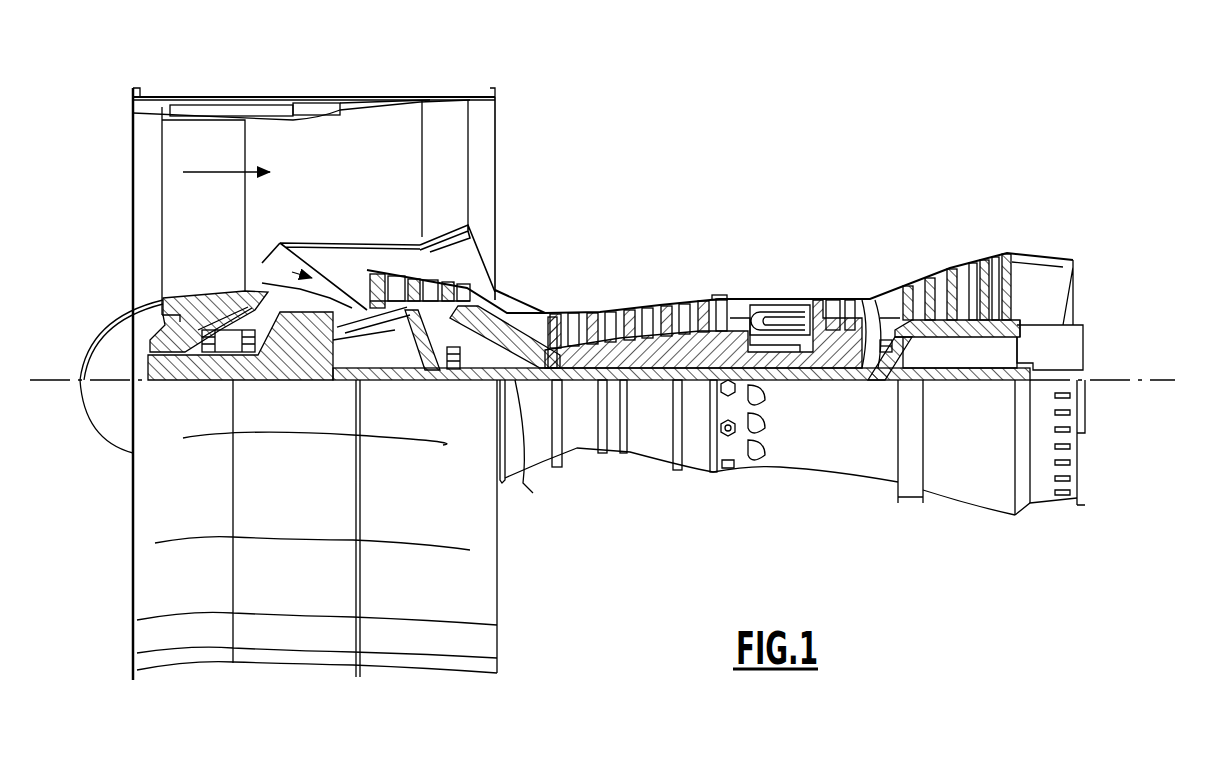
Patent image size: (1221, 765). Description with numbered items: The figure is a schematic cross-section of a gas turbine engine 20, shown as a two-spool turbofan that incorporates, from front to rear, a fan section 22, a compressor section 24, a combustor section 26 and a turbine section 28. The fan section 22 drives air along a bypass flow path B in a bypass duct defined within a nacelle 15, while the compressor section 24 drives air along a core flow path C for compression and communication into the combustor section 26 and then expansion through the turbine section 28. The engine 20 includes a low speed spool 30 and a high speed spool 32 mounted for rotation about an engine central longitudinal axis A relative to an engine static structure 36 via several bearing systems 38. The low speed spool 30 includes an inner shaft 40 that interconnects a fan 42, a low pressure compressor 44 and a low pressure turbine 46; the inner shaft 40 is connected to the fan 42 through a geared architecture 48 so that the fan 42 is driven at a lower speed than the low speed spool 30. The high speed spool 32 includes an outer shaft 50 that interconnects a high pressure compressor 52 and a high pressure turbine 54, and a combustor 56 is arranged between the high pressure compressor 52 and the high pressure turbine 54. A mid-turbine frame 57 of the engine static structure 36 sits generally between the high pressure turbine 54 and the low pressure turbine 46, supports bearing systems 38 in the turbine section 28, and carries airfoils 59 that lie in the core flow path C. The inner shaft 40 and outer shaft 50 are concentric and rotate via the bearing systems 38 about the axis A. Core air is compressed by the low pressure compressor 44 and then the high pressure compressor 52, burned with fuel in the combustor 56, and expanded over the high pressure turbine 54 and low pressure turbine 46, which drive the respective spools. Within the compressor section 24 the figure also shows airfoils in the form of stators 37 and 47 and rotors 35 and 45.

The gas turbine engine 20 is at (778, 146).
The fan section 22 is at (241, 80).
The nacelle 15 is at (316, 93).
The compressor section 24 is at (547, 286).
The combustor section 26 is at (770, 271).
The turbine section 28 is at (918, 238).
The low speed spool 30 is at (654, 388).
The high speed spool 32 is at (697, 345).
The rotor 35 is at (654, 318).
The engine static structure 36 is at (695, 473).
The stator 37 is at (662, 318).
The bearing systems 38 is at (449, 370).
The inner shaft 40 is at (353, 410).
The fan 42 is at (216, 223).
The low pressure compressor 44 is at (440, 268).
The rotor 45 is at (380, 290).
The low pressure turbine 46 is at (962, 272).
The stator 47 is at (398, 290).
The geared architecture 48 is at (323, 360).
The outer shaft 50 is at (785, 378).
The high pressure compressor 52 is at (628, 357).
The high pressure turbine 54 is at (840, 290).
The combustor 56 is at (773, 322).
The mid-turbine frame 57 is at (877, 286).
The airfoils 59 is at (905, 325).
The engine central longitudinal axis A is at (1168, 378).
The bypass flow path B is at (218, 168).
The core flow path C is at (285, 270).